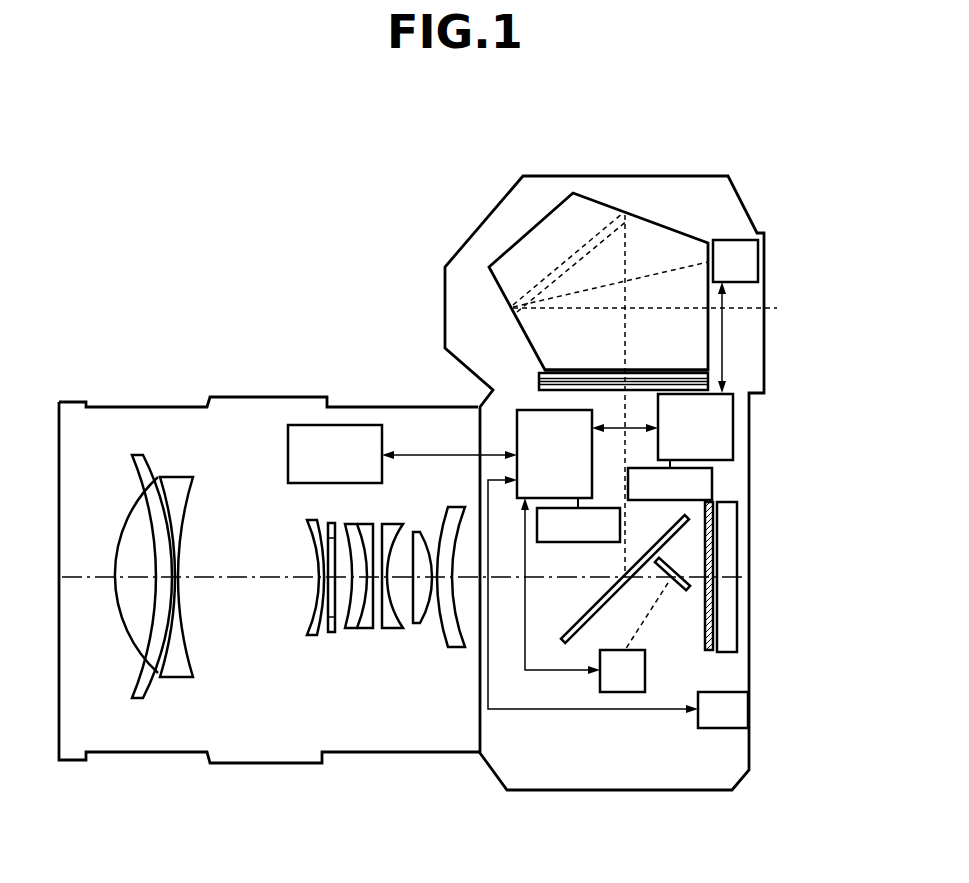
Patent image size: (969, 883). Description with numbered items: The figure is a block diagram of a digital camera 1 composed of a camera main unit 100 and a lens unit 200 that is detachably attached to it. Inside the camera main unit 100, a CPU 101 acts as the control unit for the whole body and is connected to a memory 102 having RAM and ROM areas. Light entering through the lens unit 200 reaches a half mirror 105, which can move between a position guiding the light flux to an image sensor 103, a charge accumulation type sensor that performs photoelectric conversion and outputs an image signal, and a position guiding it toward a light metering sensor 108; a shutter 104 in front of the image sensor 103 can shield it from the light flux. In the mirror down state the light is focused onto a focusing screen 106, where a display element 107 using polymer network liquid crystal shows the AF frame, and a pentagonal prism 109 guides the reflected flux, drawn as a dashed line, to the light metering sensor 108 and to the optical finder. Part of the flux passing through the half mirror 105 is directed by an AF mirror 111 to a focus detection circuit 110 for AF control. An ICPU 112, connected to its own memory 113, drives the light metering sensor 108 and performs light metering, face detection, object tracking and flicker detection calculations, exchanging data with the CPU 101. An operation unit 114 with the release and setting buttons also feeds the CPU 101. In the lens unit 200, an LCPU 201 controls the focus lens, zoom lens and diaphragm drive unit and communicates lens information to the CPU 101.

The digital camera 1 is at (711, 154).
The camera main unit 100 is at (613, 780).
The CPU 101 is at (533, 409).
The memory 102 is at (555, 542).
The image sensor 103 is at (730, 633).
The shutter 104 is at (708, 525).
The half mirror 105 is at (673, 538).
The focusing screen 106 is at (558, 387).
The display element 107 is at (687, 374).
The light metering sensor 108 is at (758, 260).
The pentagonal prism 109 is at (525, 226).
The focus detection circuit 110 is at (645, 667).
The AF mirror 111 is at (690, 583).
The ICPU 112 is at (733, 427).
The memory 113 is at (712, 478).
The operation unit 114 is at (738, 711).
The lens unit 200 is at (115, 418).
The LCPU 201 is at (352, 425).